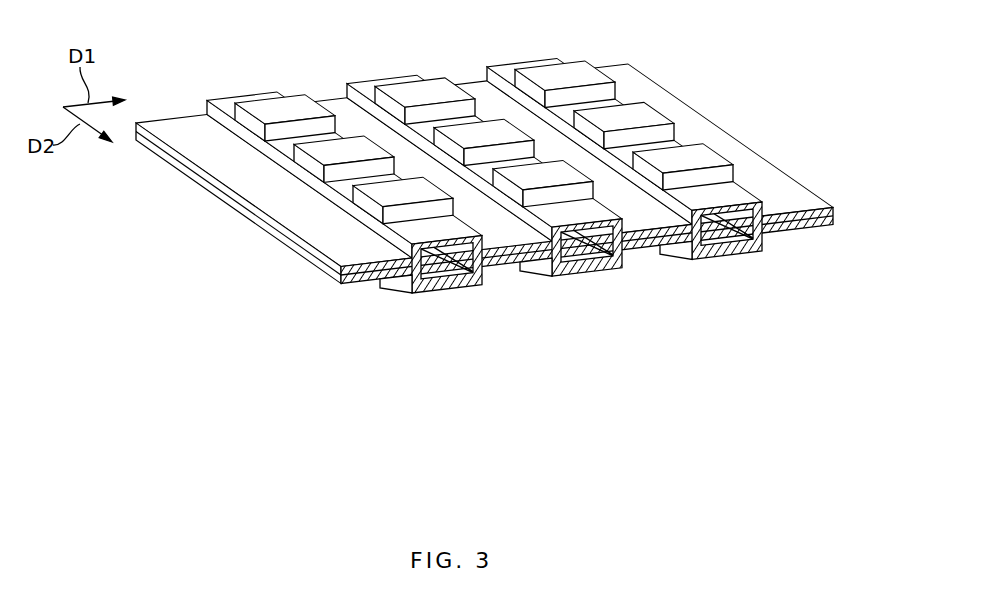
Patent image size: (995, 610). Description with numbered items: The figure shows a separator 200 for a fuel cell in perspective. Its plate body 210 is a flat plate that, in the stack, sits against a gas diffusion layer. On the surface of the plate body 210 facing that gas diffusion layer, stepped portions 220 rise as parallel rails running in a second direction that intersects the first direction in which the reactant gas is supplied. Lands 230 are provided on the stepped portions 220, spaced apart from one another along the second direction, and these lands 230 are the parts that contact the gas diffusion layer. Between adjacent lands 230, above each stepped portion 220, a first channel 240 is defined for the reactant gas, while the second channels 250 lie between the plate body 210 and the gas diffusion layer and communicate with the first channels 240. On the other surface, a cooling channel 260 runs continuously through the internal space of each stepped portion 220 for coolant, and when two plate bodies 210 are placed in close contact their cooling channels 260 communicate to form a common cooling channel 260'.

The separator 200 is at (517, 200).
The plate body 210 is at (372, 281).
The stepped portion 220 is at (500, 254).
The land 230 is at (355, 196).
The first channel 240 is at (374, 180).
The second channel 250 is at (425, 165).
The cooling channel 260 is at (587, 282).
The common cooling channel 260' is at (536, 305).